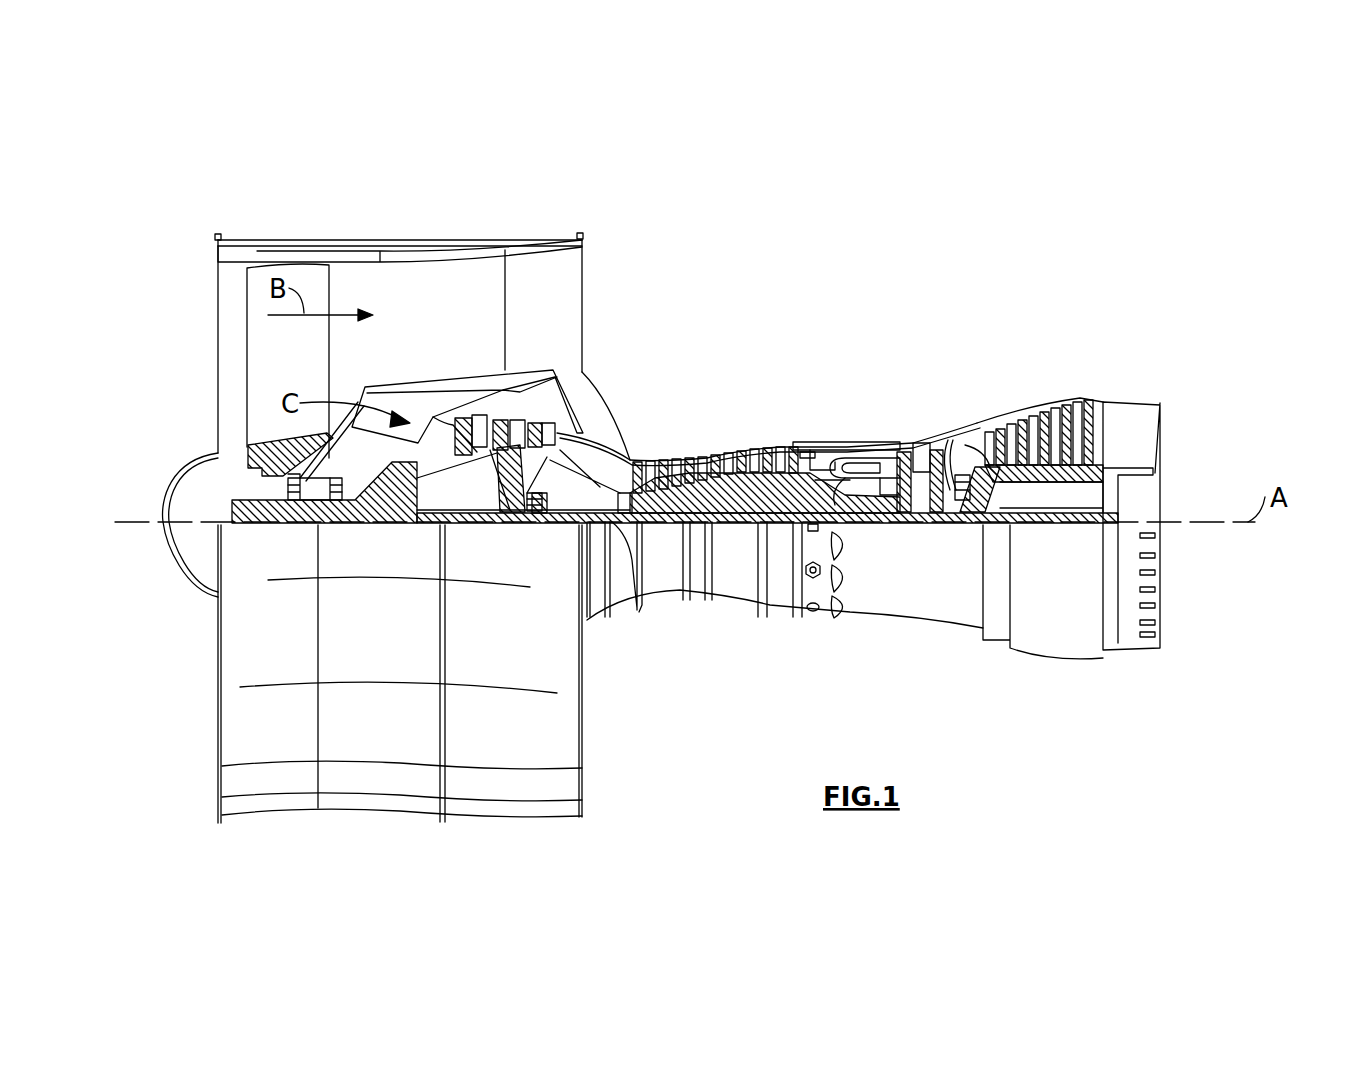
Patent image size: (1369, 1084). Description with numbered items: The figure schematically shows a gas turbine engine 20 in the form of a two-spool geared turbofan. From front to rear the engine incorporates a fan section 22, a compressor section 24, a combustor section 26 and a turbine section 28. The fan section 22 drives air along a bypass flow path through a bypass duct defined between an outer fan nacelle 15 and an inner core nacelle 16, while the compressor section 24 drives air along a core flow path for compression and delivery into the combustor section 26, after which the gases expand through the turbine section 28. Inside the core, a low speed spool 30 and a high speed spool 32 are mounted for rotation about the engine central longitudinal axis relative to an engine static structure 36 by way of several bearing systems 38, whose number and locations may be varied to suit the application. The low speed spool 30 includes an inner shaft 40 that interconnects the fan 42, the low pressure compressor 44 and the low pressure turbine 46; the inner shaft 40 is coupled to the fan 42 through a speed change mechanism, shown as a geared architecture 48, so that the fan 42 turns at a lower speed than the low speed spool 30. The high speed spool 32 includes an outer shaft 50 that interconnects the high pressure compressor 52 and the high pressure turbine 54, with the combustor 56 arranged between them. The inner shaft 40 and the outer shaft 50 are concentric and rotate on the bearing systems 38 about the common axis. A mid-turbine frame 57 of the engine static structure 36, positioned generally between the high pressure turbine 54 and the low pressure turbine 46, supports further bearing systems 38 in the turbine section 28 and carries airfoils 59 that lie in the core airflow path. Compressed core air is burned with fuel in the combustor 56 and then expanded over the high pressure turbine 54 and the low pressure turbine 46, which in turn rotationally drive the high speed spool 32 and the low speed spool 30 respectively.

The fan nacelle 15 is at (400, 243).
The core nacelle 16 is at (395, 385).
The gas turbine engine 20 is at (866, 285).
The fan section 22 is at (330, 228).
The compressor section 24 is at (657, 383).
The combustor section 26 is at (855, 410).
The turbine section 28 is at (1005, 375).
The low speed spool 30 is at (741, 535).
The high speed spool 32 is at (780, 480).
The engine static structure 36 is at (778, 630).
The bearing systems 38 is at (540, 493).
The inner shaft 40 is at (598, 540).
The fan 42 is at (346, 543).
The low pressure compressor 44 is at (505, 433).
The low pressure turbine 46 is at (1047, 417).
The geared architecture 48 is at (407, 505).
The outer shaft 50 is at (867, 507).
The high pressure compressor 52 is at (713, 497).
The high pressure turbine 54 is at (920, 440).
The combustor 56 is at (853, 467).
The mid-turbine frame 57 is at (966, 425).
The airfoils 59 is at (975, 465).